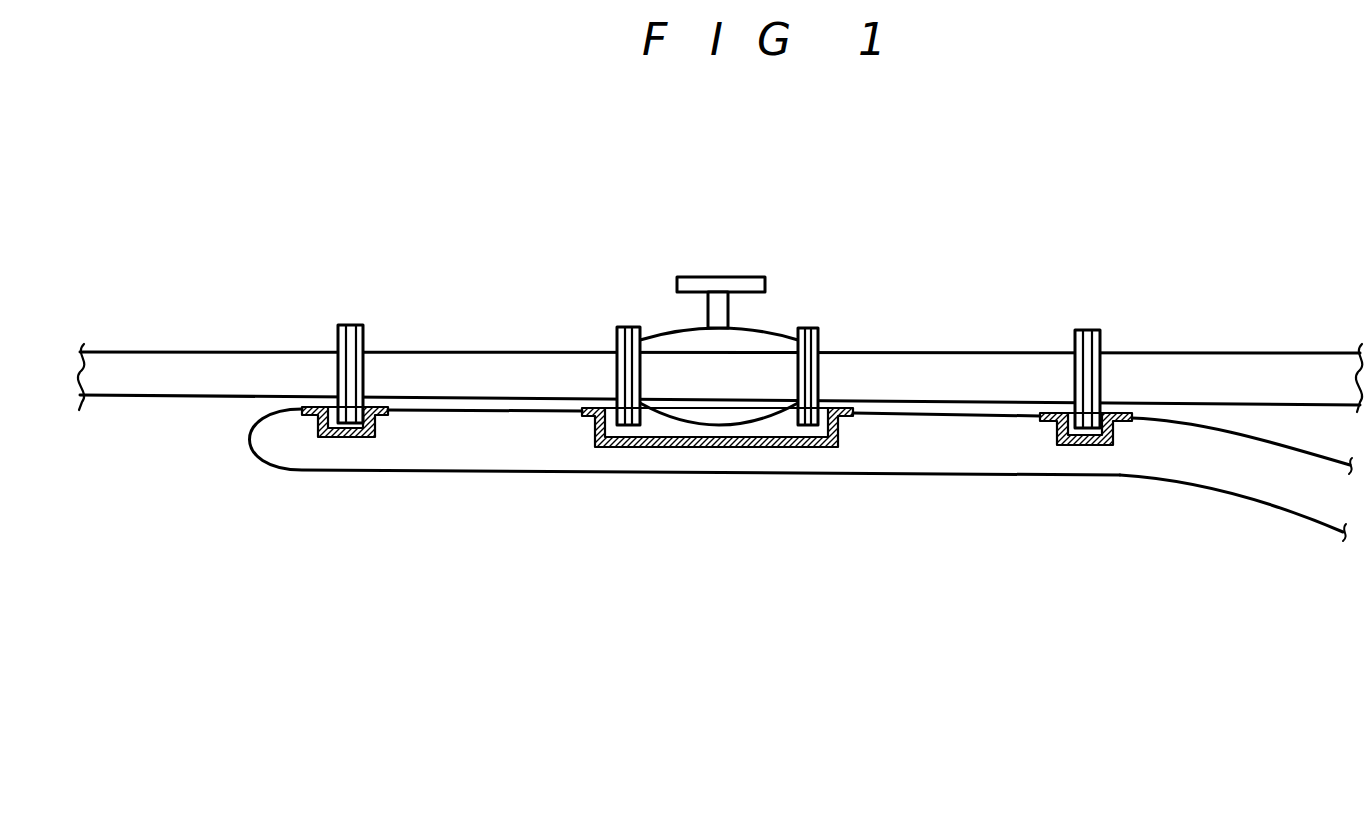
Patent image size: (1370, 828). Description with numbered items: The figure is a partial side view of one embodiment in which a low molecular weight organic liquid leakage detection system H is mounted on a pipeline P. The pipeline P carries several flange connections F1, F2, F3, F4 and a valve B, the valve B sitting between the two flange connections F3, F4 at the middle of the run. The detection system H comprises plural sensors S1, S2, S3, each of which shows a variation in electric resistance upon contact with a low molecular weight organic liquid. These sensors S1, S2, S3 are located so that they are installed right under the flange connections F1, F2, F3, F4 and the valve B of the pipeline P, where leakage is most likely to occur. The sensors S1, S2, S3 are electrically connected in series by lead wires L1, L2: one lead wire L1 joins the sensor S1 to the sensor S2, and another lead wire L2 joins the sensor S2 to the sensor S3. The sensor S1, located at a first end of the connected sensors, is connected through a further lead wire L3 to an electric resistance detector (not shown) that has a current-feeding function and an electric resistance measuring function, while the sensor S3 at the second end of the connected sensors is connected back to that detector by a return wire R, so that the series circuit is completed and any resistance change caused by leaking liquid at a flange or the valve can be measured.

The pipeline P is at (922, 338).
The valve B is at (722, 277).
The flange connection F1 is at (1090, 330).
The flange connection F2 is at (353, 325).
The flange connection F3 is at (810, 327).
The flange connection F4 is at (622, 327).
The low molecular weight organic liquid leakage detection system H is at (830, 488).
The sensor S1 is at (1095, 447).
The sensor S2 is at (715, 447).
The sensor S3 is at (343, 437).
The lead wire L1 is at (957, 418).
The lead wire L2 is at (487, 415).
The lead wire L3 is at (1233, 436).
The return wire R is at (1318, 523).